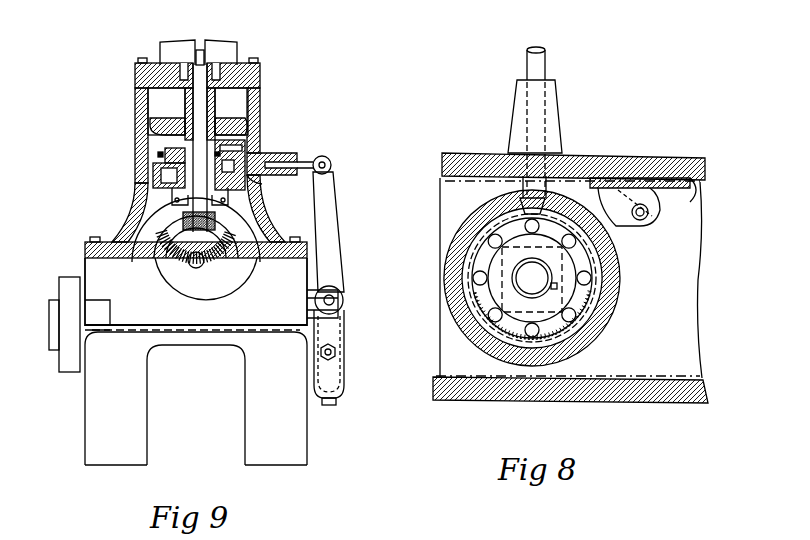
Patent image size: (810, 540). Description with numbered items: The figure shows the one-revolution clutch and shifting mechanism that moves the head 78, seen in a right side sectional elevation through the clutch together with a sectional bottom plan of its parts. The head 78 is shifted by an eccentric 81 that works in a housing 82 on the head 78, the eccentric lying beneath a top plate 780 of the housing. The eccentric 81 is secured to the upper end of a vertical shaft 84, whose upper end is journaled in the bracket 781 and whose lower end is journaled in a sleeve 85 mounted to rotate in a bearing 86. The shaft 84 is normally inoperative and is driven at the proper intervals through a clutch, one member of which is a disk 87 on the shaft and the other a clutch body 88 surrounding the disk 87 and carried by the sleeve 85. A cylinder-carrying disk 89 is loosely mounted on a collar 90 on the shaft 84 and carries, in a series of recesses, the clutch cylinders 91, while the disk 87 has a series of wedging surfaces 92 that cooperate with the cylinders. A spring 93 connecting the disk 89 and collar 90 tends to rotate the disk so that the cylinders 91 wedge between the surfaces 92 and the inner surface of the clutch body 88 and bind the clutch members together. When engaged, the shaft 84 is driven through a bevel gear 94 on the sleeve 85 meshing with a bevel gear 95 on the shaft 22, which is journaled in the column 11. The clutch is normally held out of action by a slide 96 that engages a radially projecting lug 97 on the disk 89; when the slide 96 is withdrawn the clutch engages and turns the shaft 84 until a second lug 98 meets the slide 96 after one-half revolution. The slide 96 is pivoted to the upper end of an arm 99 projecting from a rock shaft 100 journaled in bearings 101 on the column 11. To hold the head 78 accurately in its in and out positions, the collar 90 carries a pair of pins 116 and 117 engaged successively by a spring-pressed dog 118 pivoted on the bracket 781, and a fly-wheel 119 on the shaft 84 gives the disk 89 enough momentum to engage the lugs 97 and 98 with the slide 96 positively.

In FIG. 9, the column 11 is at (148, 405).
In FIG. 9, the shaft 22 is at (196, 262).
In FIG. 9, the head 78 is at (175, 48).
In FIG. 9, the eccentric 81 is at (212, 64).
In FIG. 9, the housing 82 is at (160, 62).
In FIG. 9, the vertical shaft 84 is at (195, 98).
In FIG. 9, the sleeve 85 is at (165, 190).
In FIG. 9, the bearing 86 is at (172, 200).
In FIG. 9, the disk 87 is at (242, 182).
In FIG. 8, the disk 87 is at (612, 277).
In FIG. 9, the clutch body 88 is at (152, 168).
In FIG. 9, the cylinder-carrying disk 89 is at (160, 162).
In FIG. 9, the collar 90 is at (170, 150).
In FIG. 9, the clutch cylinders 91 is at (252, 188).
In FIG. 8, the clutch cylinders 91 is at (494, 236).
In FIG. 8, the wedging surfaces 92 is at (596, 268).
In FIG. 9, the spring 93 is at (158, 155).
In FIG. 8, the spring 93 is at (608, 305).
In FIG. 9, the bevel gear 94 is at (214, 224).
In FIG. 9, the bevel gear 95 is at (236, 252).
In FIG. 9, the slide 96 is at (306, 164).
In FIG. 8, the slide 96 is at (547, 60).
In FIG. 8, the lug 97 is at (528, 204).
In FIG. 8, the second lug 98 is at (565, 352).
In FIG. 9, the arm 99 is at (338, 235).
In FIG. 9, the rock shaft 100 is at (333, 292).
In FIG. 9, the bearings 101 is at (312, 297).
In FIG. 8, the pin 116 is at (594, 250).
In FIG. 8, the pin 117 is at (468, 330).
In FIG. 8, the spring-pressed dog 118 is at (608, 224).
In FIG. 9, the fly-wheel 119 is at (245, 125).
In FIG. 9, the top plate 780 is at (260, 78).
In FIG. 9, the bracket 781 is at (136, 172).
In FIG. 8, the bracket 781 is at (692, 190).